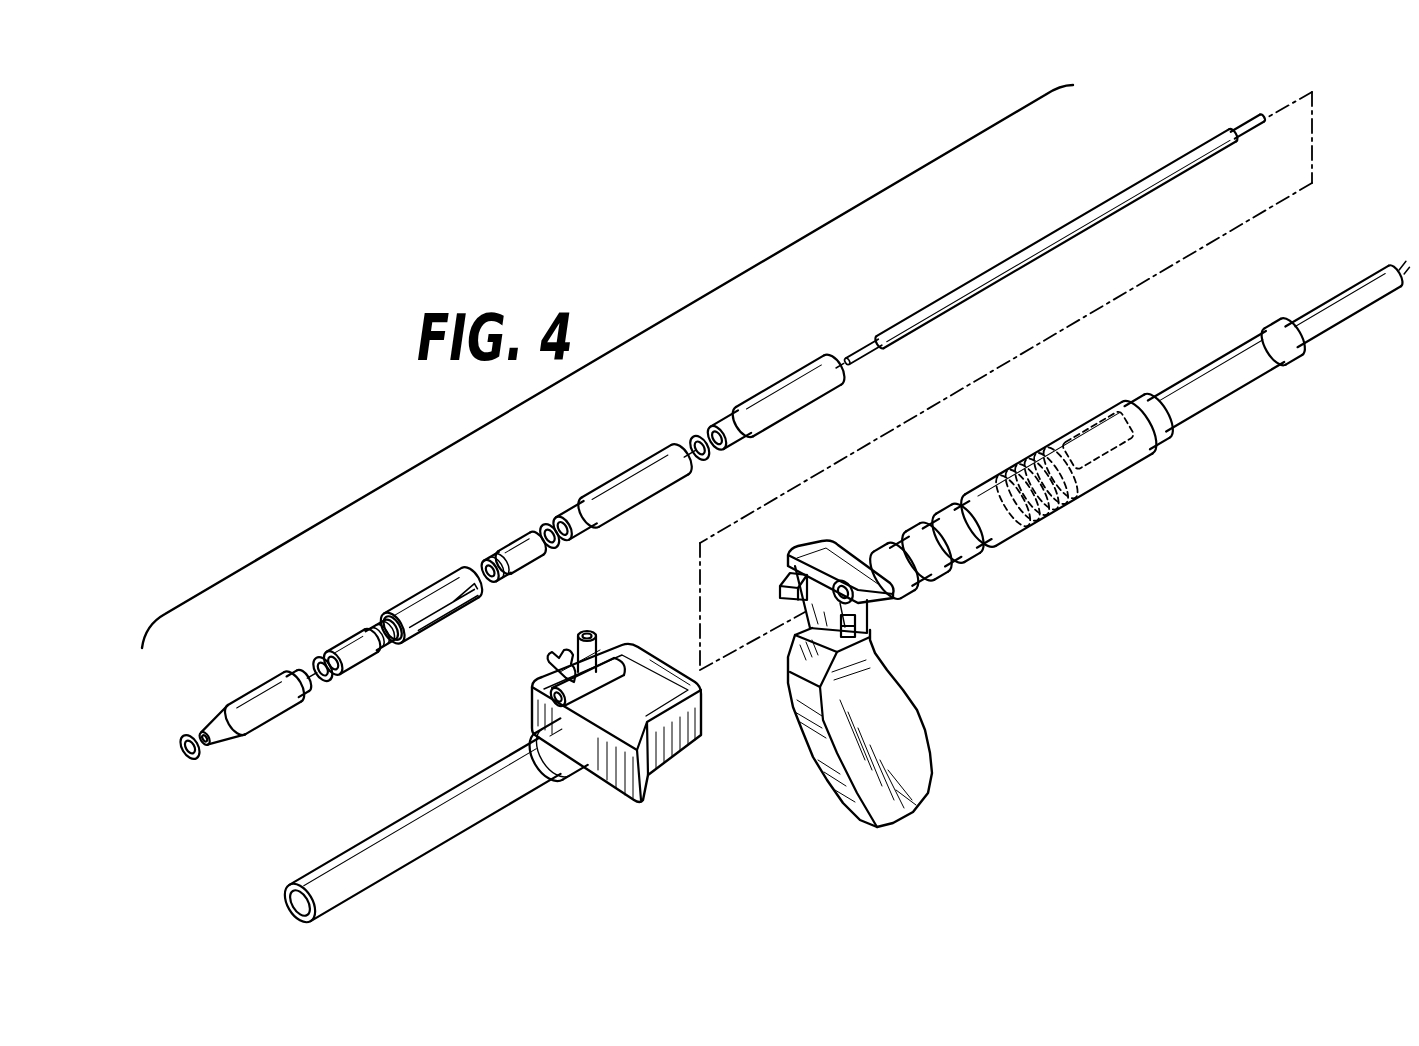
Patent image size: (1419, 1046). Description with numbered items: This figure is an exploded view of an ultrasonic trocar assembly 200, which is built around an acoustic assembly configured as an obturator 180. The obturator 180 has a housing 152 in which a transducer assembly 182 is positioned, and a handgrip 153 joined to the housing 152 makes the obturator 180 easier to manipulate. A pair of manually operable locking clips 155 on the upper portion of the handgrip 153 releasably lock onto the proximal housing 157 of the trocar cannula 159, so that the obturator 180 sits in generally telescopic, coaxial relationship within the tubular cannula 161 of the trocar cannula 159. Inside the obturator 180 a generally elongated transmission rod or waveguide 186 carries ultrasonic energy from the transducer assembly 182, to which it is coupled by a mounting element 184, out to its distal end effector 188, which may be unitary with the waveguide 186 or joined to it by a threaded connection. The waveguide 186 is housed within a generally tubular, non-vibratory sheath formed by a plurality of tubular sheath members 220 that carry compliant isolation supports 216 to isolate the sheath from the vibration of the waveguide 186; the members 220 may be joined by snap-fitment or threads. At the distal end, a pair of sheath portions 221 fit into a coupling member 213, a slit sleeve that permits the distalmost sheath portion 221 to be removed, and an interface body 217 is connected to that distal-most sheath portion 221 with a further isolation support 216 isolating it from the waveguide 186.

The housing 152 is at (928, 576).
The handgrip 153 is at (924, 720).
The locking clips 155 is at (779, 592).
The proximal housing 157 is at (682, 736).
The trocar cannula 159 is at (612, 833).
The tubular cannula 161 is at (477, 811).
The obturator 180 is at (1118, 527).
The transducer assembly 182 is at (1030, 458).
The mounting element 184 is at (856, 590).
The waveguide 186 is at (1018, 250).
The end effector 188 is at (868, 343).
The trocar assembly 200 is at (1235, 752).
The coupling member 213 is at (438, 584).
The isolation supports 216 is at (188, 734).
The interface body 217 is at (264, 729).
The tubular sheath members 220 is at (629, 472).
The sheath portions 221 is at (360, 668).